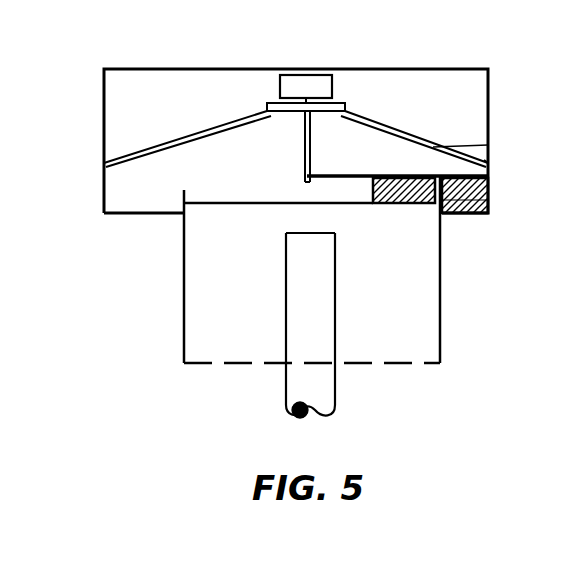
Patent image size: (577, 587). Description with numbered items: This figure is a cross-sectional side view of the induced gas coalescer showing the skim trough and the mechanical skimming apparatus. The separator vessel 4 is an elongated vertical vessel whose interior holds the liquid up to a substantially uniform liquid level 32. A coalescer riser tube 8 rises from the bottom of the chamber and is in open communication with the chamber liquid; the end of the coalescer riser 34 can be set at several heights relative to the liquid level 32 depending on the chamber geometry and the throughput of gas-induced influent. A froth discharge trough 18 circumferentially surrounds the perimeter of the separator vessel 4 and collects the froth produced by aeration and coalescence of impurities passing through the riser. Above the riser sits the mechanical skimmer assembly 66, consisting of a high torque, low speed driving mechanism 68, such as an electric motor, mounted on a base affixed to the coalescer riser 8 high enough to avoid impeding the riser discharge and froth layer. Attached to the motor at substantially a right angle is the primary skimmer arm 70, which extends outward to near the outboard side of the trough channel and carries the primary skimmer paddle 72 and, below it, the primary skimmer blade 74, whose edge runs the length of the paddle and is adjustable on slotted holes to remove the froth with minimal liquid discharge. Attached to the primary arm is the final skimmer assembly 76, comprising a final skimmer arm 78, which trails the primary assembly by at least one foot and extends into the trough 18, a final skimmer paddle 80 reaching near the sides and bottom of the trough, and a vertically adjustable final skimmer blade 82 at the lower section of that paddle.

The separator vessel 4 is at (440, 320).
The coalescer riser tube 8 is at (316, 311).
The froth discharge trough 18 is at (104, 190).
The liquid level 32 is at (246, 203).
The end of the coalescer riser 34 is at (335, 233).
The mechanical skimmer assembly 66 is at (414, 134).
The driving mechanism 68 is at (310, 69).
The primary skimmer arm 70 is at (338, 176).
The primary skimmer paddle 72 is at (384, 177).
The primary skimmer blade 74 is at (418, 177).
The final skimmer assembly 76 is at (462, 185).
The final skimmer arm 78 is at (490, 162).
The final skimmer paddle 80 is at (488, 200).
The final skimmer blade 82 is at (462, 214).